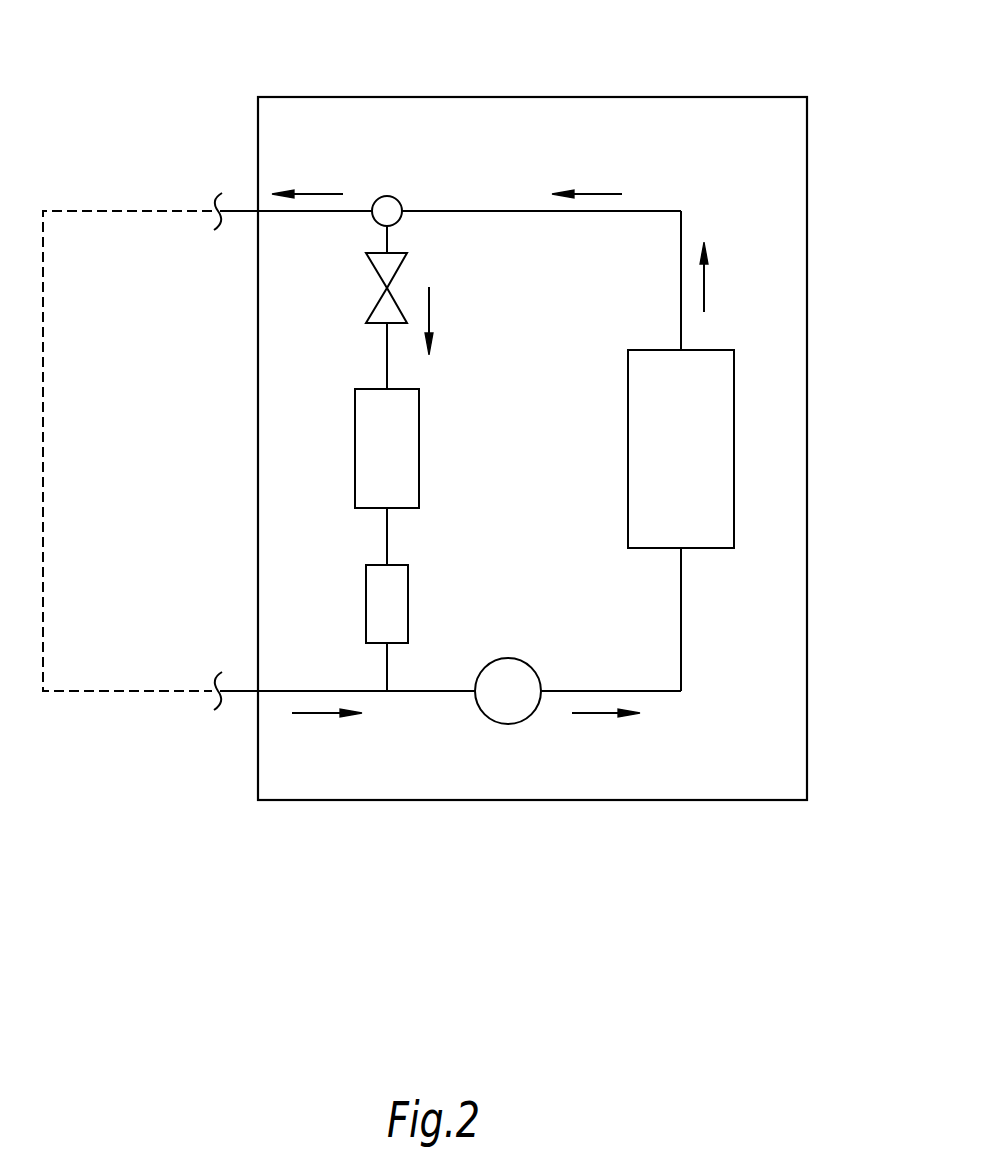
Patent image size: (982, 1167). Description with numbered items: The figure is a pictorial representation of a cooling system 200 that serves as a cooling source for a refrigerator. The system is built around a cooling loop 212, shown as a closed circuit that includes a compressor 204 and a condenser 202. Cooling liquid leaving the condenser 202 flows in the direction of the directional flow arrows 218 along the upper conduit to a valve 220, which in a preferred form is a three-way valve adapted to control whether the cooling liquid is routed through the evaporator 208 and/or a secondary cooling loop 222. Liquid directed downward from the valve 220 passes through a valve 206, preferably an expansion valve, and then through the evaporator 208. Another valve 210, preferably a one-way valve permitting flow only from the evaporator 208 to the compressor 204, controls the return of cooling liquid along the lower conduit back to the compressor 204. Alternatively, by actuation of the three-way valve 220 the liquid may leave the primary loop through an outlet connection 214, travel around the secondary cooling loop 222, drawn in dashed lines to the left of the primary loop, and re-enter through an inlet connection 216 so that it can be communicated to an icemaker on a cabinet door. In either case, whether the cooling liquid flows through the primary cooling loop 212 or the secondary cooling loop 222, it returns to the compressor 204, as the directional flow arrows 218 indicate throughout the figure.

The cooling system 200 is at (582, 40).
The condenser 202 is at (640, 392).
The compressor 204 is at (515, 673).
The expansion valve 206 is at (385, 300).
The evaporator 208 is at (407, 438).
The one-way valve 210 is at (397, 598).
The cooling loop 212 is at (657, 210).
The outlet connection 214 is at (243, 210).
The inlet connection 216 is at (243, 690).
The directional flow arrows 218 is at (317, 193).
The three-way valve 220 is at (398, 200).
The secondary cooling loop 222 is at (44, 452).